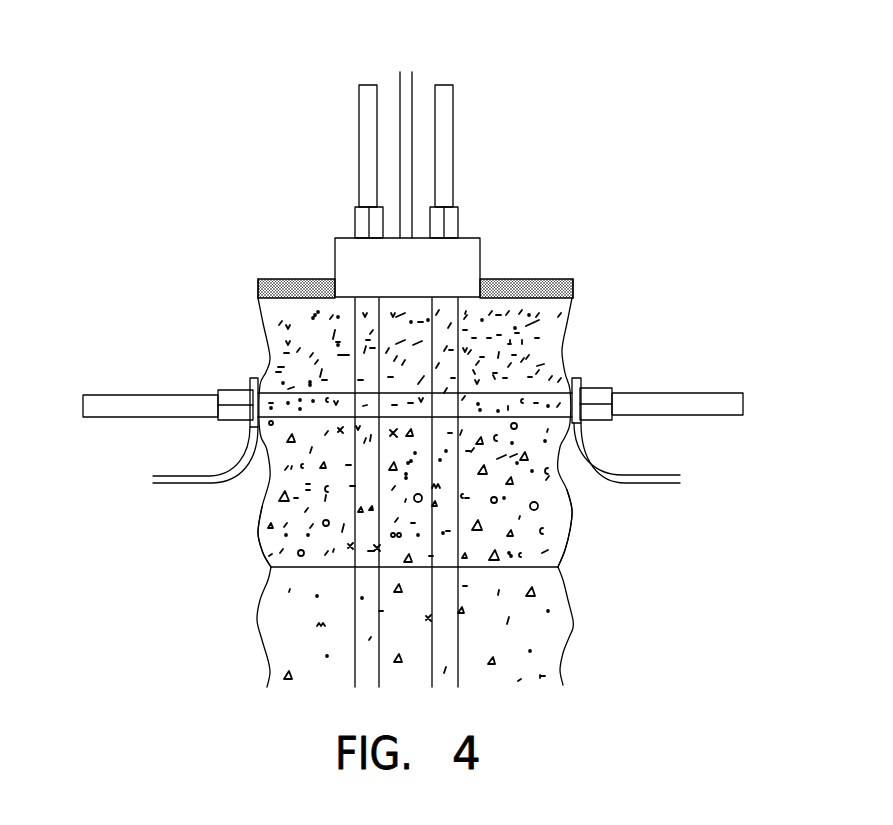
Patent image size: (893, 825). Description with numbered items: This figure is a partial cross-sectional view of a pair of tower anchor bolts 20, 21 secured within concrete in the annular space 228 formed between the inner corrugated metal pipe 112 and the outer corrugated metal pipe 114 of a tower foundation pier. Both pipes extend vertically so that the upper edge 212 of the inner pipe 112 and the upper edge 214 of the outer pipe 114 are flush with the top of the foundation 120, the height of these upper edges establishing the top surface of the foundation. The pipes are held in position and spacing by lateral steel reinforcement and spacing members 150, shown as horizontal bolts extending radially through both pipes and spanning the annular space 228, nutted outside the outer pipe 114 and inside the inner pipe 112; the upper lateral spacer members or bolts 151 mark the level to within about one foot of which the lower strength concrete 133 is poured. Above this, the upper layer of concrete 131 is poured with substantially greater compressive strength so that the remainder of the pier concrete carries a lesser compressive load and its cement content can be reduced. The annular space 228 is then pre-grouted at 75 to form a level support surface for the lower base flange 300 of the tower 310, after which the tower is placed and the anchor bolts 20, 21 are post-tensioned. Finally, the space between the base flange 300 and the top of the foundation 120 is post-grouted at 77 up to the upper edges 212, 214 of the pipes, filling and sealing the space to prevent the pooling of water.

The tower anchor bolt 20 is at (359, 122).
The tower anchor bolt 21 is at (451, 126).
The tower 310 is at (408, 87).
The post-grouting 77 is at (296, 279).
The lower base flange 300 is at (473, 258).
The top of the foundation 120 is at (533, 276).
The upper edge of the inner CMP 212 is at (262, 279).
The upper edge of the outer CMP 214 is at (568, 279).
The pre-grouting 75 is at (545, 345).
The lateral steel reinforcement and spacing members 150 is at (105, 386).
The upper lateral spacer members or bolts 151 is at (693, 403).
The upper layer of concrete 131 is at (525, 490).
The outer CMP 114 is at (569, 537).
The inner CMP 112 is at (265, 540).
The concrete 133 is at (281, 626).
The annular space 228 is at (514, 644).